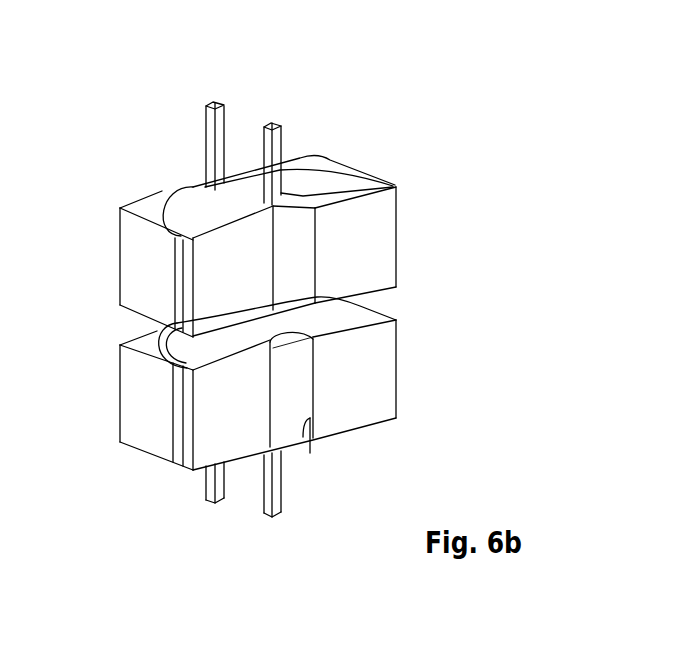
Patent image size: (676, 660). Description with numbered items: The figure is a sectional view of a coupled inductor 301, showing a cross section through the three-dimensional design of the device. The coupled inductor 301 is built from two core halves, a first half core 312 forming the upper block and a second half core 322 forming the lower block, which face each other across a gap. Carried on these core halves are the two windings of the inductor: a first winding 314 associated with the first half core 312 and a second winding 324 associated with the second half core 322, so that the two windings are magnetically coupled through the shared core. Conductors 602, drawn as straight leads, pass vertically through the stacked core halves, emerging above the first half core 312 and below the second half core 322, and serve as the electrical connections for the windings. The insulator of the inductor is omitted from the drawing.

The coupled inductor 301 is at (360, 122).
The first half core 312 is at (128, 200).
The first winding 314 is at (392, 219).
The second half core 322 is at (117, 415).
The second winding 324 is at (300, 373).
The conductors 602 is at (213, 103).